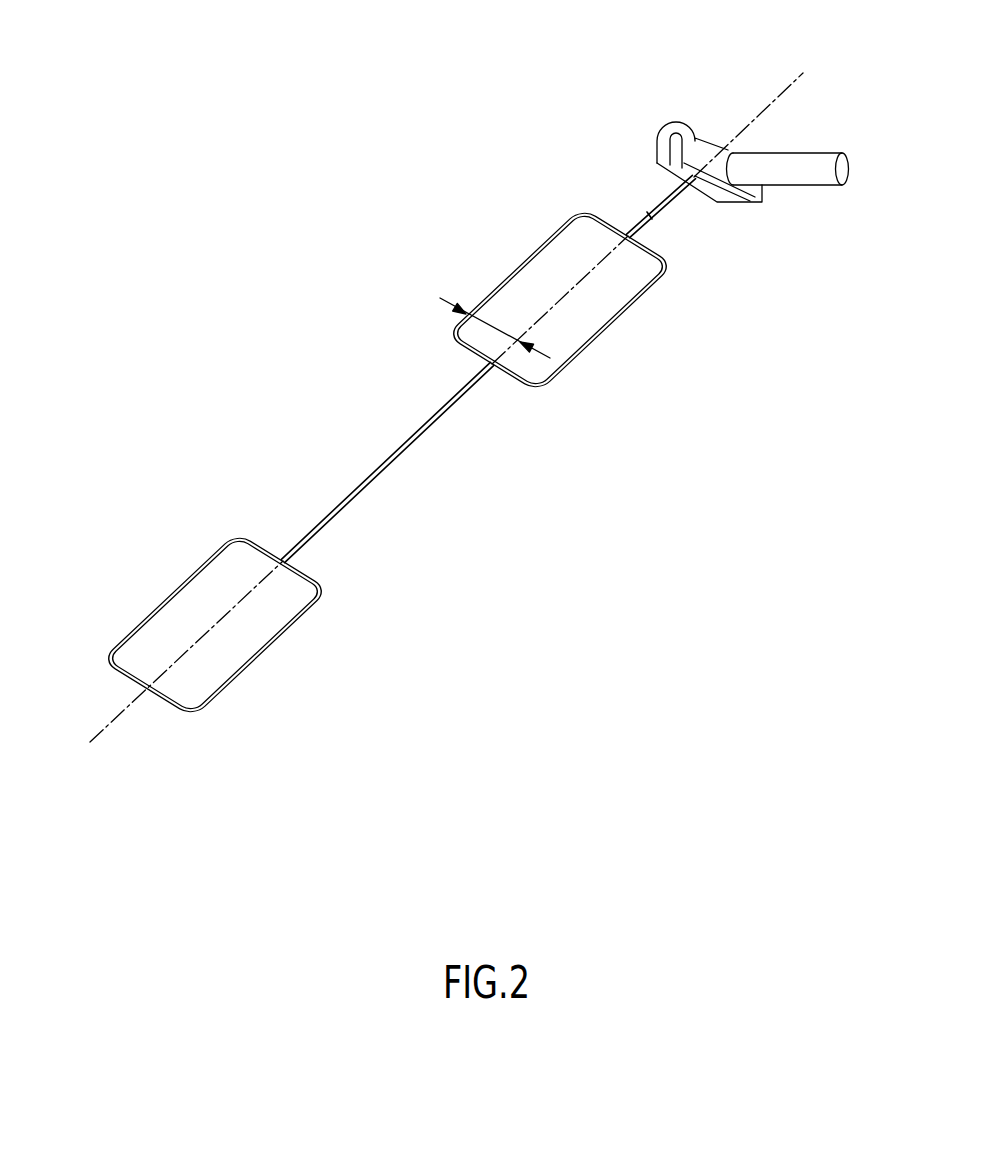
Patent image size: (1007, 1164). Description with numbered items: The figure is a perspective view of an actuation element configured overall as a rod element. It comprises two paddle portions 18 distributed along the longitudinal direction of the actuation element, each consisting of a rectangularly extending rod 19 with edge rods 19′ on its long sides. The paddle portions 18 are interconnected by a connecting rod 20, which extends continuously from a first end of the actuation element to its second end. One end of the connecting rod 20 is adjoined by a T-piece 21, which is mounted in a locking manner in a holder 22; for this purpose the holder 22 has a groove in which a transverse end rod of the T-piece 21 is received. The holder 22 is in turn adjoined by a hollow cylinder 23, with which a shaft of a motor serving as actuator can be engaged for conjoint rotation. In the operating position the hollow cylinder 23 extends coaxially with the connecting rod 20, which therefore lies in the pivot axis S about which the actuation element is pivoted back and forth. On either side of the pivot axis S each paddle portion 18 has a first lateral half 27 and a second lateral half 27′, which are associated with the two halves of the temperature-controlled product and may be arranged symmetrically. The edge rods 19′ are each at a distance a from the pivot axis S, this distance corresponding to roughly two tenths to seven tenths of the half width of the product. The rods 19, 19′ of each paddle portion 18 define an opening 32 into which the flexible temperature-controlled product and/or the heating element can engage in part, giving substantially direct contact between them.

The paddle portion 18 is at (578, 405).
The rod 19 is at (652, 242).
The edge rod 19′ is at (532, 252).
The connecting rod 20 is at (405, 452).
The T-piece 21 is at (665, 197).
The holder 22 is at (707, 147).
The hollow cylinder 23 is at (797, 165).
The first lateral half 27 is at (452, 355).
The second lateral half 27′ is at (495, 400).
The opening 32 is at (568, 327).
The pivot axis S is at (748, 121).
The distance a is at (495, 328).